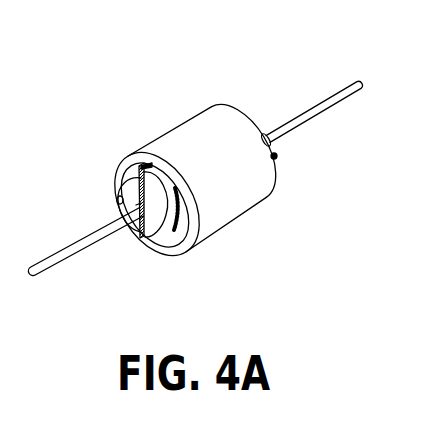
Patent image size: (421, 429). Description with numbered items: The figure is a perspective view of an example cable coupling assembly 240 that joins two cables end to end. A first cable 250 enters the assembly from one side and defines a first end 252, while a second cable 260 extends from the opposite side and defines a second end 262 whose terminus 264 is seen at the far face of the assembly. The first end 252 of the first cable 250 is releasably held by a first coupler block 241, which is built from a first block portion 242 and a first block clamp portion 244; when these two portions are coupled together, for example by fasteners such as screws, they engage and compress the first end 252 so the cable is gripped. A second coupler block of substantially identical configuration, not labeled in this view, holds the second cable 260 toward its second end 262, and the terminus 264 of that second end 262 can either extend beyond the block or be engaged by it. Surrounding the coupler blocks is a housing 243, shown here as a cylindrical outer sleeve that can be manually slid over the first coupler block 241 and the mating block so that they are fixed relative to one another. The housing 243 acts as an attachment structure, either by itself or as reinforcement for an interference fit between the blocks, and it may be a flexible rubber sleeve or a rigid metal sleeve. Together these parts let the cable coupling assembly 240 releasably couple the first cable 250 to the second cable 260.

The cable coupling assembly 240 is at (178, 75).
The first coupler block 241 is at (146, 244).
The first block portion 242 is at (129, 182).
The housing 243 is at (202, 116).
The first block clamp portion 244 is at (168, 220).
The first cable 250 is at (74, 249).
The first end 252 is at (126, 235).
The second cable 260 is at (352, 97).
The second end 262 is at (258, 107).
The terminus 264 is at (279, 157).